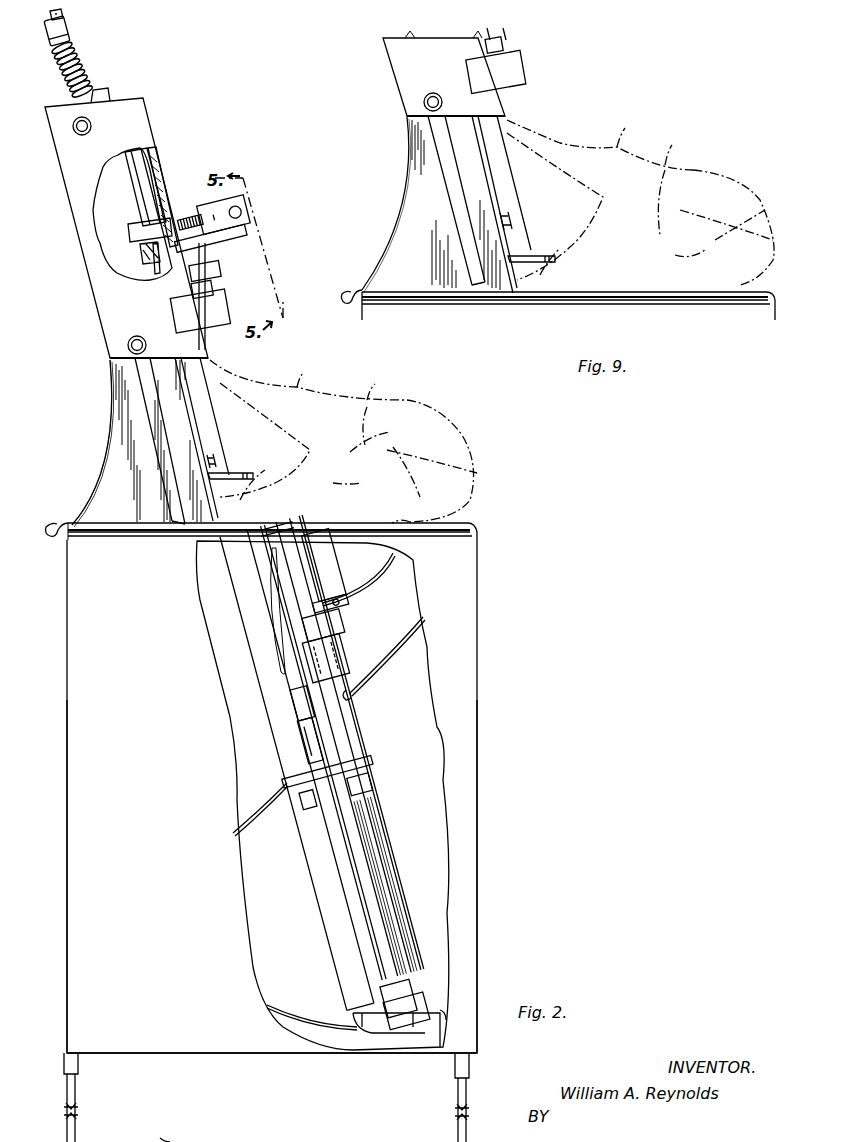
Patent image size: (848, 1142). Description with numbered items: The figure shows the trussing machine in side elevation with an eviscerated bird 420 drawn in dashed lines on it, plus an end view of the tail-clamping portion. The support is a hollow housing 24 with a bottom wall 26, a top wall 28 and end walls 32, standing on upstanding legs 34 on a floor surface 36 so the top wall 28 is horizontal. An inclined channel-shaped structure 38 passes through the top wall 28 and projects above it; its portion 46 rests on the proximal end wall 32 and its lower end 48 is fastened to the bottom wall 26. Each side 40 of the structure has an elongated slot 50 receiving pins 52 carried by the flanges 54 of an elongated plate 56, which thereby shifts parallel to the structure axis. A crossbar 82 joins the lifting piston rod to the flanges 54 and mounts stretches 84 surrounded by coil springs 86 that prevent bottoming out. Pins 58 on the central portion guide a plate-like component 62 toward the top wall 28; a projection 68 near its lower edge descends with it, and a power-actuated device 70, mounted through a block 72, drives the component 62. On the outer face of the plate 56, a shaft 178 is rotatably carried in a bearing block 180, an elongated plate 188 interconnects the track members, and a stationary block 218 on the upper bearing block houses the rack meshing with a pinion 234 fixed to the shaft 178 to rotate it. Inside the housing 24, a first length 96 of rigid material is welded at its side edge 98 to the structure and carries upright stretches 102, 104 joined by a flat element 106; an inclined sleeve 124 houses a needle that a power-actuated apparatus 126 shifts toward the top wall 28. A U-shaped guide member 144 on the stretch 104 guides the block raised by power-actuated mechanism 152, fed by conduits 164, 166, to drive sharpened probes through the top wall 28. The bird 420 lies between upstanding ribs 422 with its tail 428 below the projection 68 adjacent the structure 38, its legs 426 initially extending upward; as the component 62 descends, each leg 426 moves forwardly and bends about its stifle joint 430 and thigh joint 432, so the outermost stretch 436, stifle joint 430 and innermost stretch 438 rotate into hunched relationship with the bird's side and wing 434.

In FIG. 2, the hollow housing 24 is at (477, 703).
In FIG. 2, the bottom wall 26 is at (245, 1054).
In FIG. 2, the top wall 28 is at (472, 524).
In FIG. 9, the top wall 28 is at (773, 293).
In FIG. 2, the end walls 32 is at (67, 856).
In FIG. 2, the legs 34 is at (78, 1086).
In FIG. 2, the surface 36 is at (173, 1126).
In FIG. 2, the channel-shaped structure 38 is at (89, 478).
In FIG. 9, the channel-shaped structure 38 is at (385, 243).
In FIG. 2, the side 40 is at (92, 90).
In FIG. 9, the side 40 is at (418, 174).
In FIG. 2, the portion 46 is at (68, 523).
In FIG. 9, the portion 46 is at (362, 290).
In FIG. 2, the lower end 48 is at (340, 1043).
In FIG. 2, the elongated slot 50 is at (142, 378).
In FIG. 9, the elongated slot 50 is at (460, 165).
In FIG. 2, the pins 52 is at (78, 133).
In FIG. 9, the pins 52 is at (424, 103).
In FIG. 2, the flanges 54 is at (80, 188).
In FIG. 9, the flanges 54 is at (420, 78).
In FIG. 2, the elongated plate 56 is at (157, 150).
In FIG. 2, the pins 58 is at (216, 458).
In FIG. 9, the pins 58 is at (514, 228).
In FIG. 2, the plate-like component 62 is at (195, 416).
In FIG. 9, the plate-like component 62 is at (500, 186).
In FIG. 2, the projection 68 is at (238, 474).
In FIG. 9, the projection 68 is at (538, 257).
In FIG. 2, the power-actuated device 70 is at (155, 185).
In FIG. 2, the block 72 is at (207, 251).
In FIG. 2, the crossbar 82 is at (60, 31).
In FIG. 2, the elongated stretches 84 is at (62, 13).
In FIG. 2, the coil springs 86 is at (78, 60).
In FIG. 2, the first length 96 is at (360, 770).
In FIG. 2, the side edge 98 is at (285, 772).
In FIG. 2, the upright stretch 102 is at (253, 577).
In FIG. 2, the upright stretch 104 is at (283, 575).
In FIG. 2, the plate-like element 106 is at (260, 543).
In FIG. 2, the sleeve 124 is at (345, 858).
In FIG. 2, the power-actuated apparatus 126 is at (390, 925).
In FIG. 2, the U-shaped guide member 144 is at (330, 578).
In FIG. 2, the power-actuated mechanism 152 is at (340, 622).
In FIG. 2, the conduit 164 is at (380, 575).
In FIG. 2, the conduit 166 is at (397, 660).
In FIG. 2, the shaft 178 is at (214, 290).
In FIG. 9, the shaft 178 is at (505, 46).
In FIG. 2, the bearing block 180 is at (221, 272).
In FIG. 2, the elongated plate 188 is at (226, 312).
In FIG. 9, the elongated plate 188 is at (523, 68).
In FIG. 2, the stationary block 218 is at (240, 205).
In FIG. 2, the pinion 234 is at (184, 218).
In FIG. 2, the eviscerated bird 420 is at (440, 458).
In FIG. 9, the eviscerated bird 420 is at (733, 212).
In FIG. 2, the upstanding rib 422 is at (419, 512).
In FIG. 2, the legs 426 is at (308, 380).
In FIG. 9, the legs 426 is at (600, 140).
In FIG. 2, the tail 428 is at (265, 446).
In FIG. 9, the tail 428 is at (545, 285).
In FIG. 2, the stifle joint 430 is at (385, 408).
In FIG. 9, the stifle joint 430 is at (673, 181).
In FIG. 2, the thigh joint 432 is at (366, 486).
In FIG. 9, the thigh joint 432 is at (663, 263).
In FIG. 2, the wing 434 is at (451, 467).
In FIG. 9, the wing 434 is at (741, 211).
In FIG. 2, the outermost stretch 436 is at (318, 380).
In FIG. 9, the outermost stretch 436 is at (633, 129).
In FIG. 2, the innermost stretch 438 is at (390, 461).